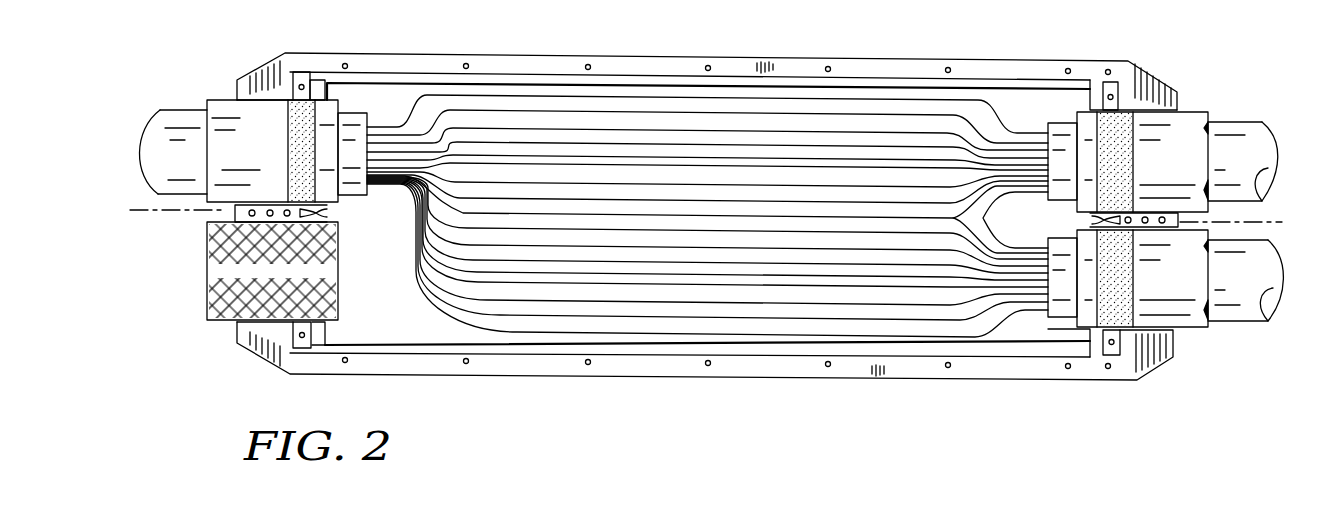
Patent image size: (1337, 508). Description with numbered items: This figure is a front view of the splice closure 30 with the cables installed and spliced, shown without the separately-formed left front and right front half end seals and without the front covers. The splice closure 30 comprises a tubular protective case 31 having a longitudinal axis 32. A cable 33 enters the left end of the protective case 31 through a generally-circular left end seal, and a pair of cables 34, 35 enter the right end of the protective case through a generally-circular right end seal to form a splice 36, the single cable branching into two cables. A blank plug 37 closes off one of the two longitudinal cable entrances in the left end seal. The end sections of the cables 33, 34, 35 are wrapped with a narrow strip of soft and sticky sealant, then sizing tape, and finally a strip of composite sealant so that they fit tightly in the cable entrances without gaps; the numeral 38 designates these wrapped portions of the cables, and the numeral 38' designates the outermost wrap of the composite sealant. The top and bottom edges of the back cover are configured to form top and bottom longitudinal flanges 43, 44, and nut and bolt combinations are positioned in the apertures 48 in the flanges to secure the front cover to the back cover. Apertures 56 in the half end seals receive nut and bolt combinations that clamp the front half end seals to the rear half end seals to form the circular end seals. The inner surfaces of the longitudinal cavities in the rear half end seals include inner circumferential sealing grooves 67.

The splice closure 30 is at (1152, 54).
The tubular protective case 31 is at (1013, 103).
The longitudinal axis 32 is at (192, 213).
The cable 33 is at (175, 133).
The cable 34 is at (1233, 138).
The cable 35 is at (1247, 300).
The splice 36 is at (640, 128).
The blank plug 37 is at (215, 267).
The wrapped portions of the cables 38 is at (712, 212).
The outermost wrap of the composite sealant 38' is at (712, 213).
The top longitudinal flange 43 is at (385, 62).
The bottom longitudinal flange 44 is at (410, 370).
The apertures 48 is at (474, 66).
The apertures 56 is at (278, 206).
The inner circumferential sealing grooves 67 is at (293, 97).